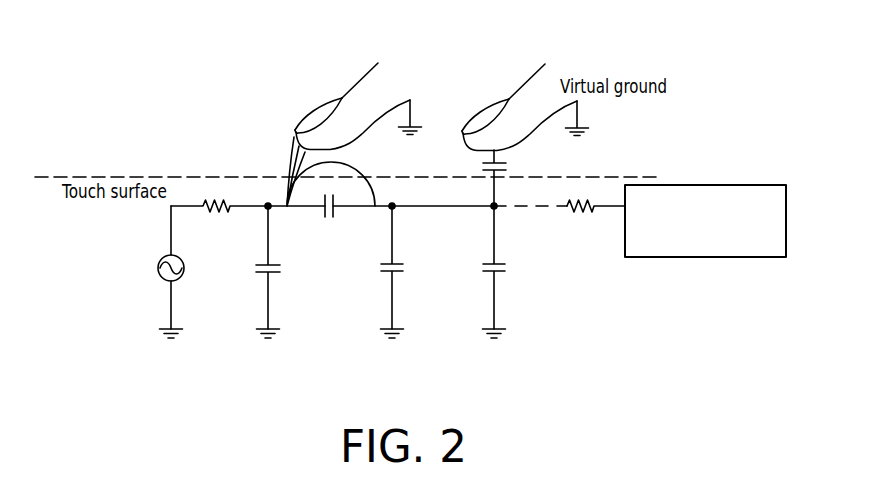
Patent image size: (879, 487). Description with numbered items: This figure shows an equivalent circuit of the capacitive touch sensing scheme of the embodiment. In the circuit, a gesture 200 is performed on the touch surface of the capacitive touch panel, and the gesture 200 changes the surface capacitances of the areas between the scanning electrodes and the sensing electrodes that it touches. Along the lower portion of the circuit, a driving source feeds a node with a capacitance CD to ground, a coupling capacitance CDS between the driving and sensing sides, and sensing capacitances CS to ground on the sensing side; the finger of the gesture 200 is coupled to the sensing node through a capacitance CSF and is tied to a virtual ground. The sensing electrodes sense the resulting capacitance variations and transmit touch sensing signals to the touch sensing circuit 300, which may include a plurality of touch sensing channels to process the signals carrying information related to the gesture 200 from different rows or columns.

The gesture 200 is at (354, 81).
The touch sensing circuit 300 is at (706, 184).
The driving capacitor CD is at (256, 270).
The drive-sense coupling capacitor CDS is at (331, 223).
The sensing capacitor CS is at (458, 270).
The finger-to-sensor capacitor CSF is at (512, 176).